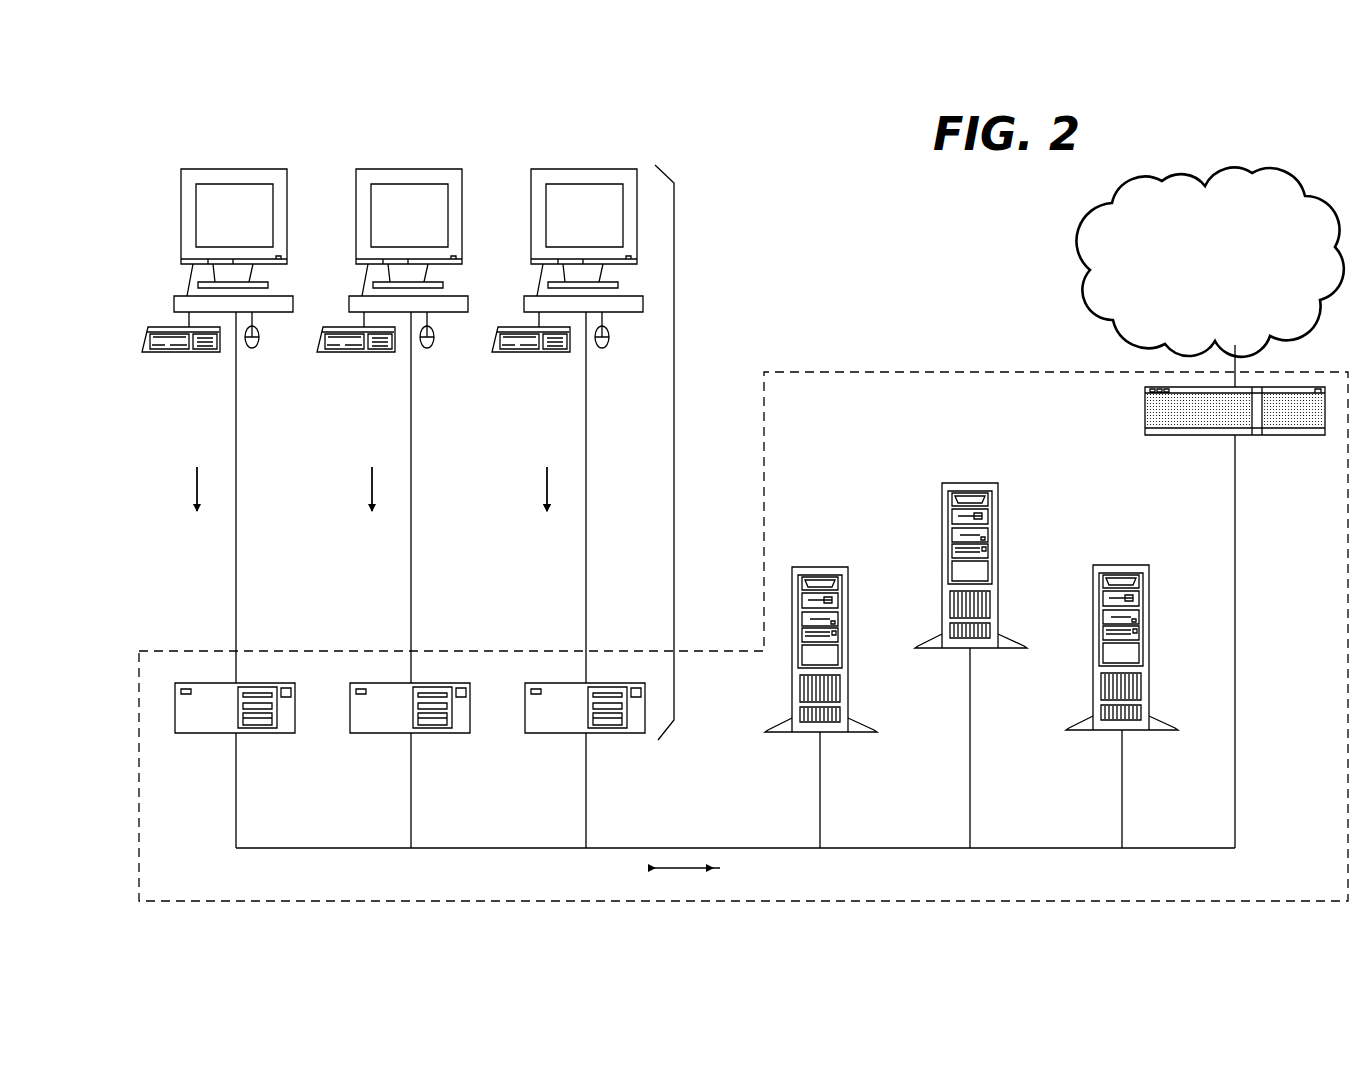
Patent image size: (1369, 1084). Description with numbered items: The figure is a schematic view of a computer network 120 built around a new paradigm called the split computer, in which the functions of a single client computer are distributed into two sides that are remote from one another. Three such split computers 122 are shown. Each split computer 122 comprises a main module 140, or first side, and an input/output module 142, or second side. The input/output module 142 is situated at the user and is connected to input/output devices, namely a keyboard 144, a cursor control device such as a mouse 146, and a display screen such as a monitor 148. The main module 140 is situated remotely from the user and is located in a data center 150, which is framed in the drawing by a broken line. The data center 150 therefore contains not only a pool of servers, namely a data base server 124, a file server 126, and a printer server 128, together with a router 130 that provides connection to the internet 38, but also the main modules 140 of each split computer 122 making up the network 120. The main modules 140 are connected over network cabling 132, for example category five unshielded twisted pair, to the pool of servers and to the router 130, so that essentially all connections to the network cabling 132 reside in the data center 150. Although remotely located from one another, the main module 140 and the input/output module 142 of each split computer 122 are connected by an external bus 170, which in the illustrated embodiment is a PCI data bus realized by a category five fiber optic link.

The Internet 38 is at (1194, 180).
The computer network 120 is at (836, 218).
The split computer 122 is at (674, 453).
The data base server 124 is at (845, 658).
The file server 126 is at (998, 500).
The printer server 128 is at (1148, 655).
The router 130 is at (1197, 432).
The network cabling 132 is at (905, 848).
The main module 140 is at (295, 718).
The input/output module 142 is at (635, 312).
The keyboard 144 is at (184, 352).
The cursor control device 146 is at (253, 348).
The display screen 148 is at (287, 205).
The data center 150 is at (764, 471).
The external bus 170 is at (236, 547).